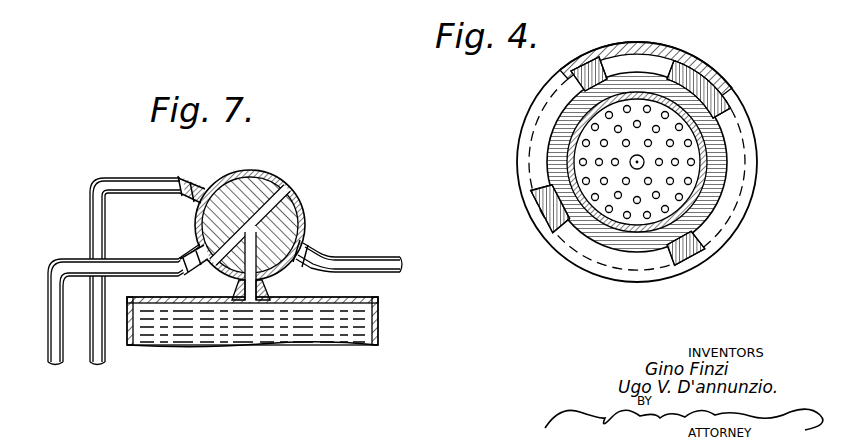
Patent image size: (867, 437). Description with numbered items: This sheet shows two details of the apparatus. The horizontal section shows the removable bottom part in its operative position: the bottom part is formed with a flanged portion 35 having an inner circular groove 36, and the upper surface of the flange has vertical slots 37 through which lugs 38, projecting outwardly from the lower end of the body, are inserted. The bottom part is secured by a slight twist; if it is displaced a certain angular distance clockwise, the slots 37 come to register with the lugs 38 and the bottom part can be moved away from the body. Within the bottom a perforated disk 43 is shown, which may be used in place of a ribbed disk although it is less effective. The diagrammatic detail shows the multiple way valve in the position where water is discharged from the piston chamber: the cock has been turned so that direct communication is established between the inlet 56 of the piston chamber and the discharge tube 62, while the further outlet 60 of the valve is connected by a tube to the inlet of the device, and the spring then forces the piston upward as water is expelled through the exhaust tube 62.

In FIG. 4, the flanged portion 35 is at (748, 120).
In FIG. 4, the inner circular groove 36 is at (718, 70).
In FIG. 4, the vertical slots 37 is at (592, 72).
In FIG. 4, the lugs 38 is at (679, 60).
In FIG. 4, the perforated disk 43 is at (675, 184).
In FIG. 7, the inlet 56 is at (276, 298).
In FIG. 7, the outlet 60 is at (91, 216).
In FIG. 7, the tube 62 is at (60, 358).